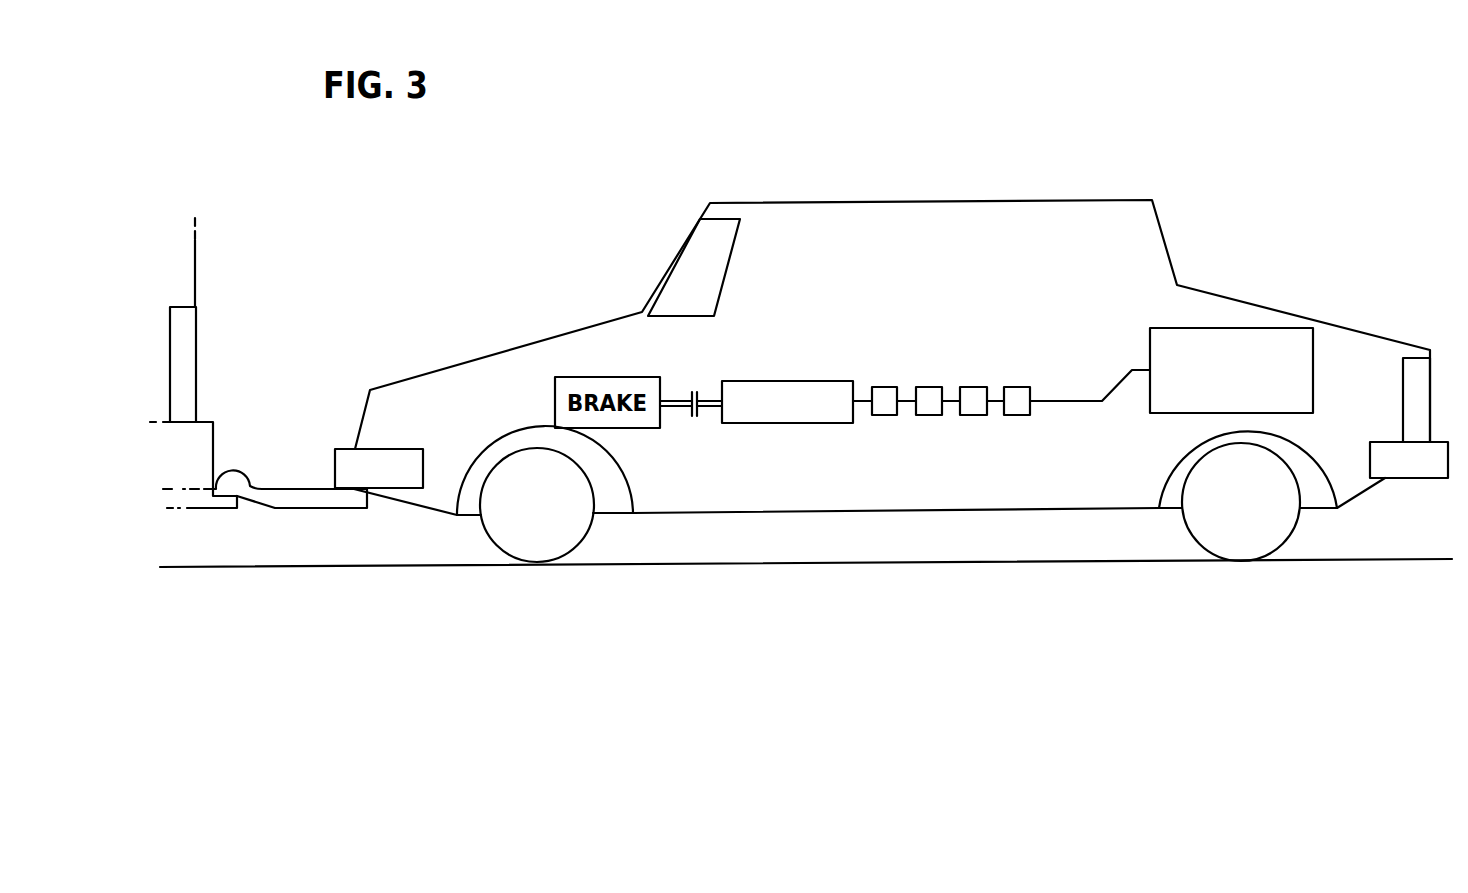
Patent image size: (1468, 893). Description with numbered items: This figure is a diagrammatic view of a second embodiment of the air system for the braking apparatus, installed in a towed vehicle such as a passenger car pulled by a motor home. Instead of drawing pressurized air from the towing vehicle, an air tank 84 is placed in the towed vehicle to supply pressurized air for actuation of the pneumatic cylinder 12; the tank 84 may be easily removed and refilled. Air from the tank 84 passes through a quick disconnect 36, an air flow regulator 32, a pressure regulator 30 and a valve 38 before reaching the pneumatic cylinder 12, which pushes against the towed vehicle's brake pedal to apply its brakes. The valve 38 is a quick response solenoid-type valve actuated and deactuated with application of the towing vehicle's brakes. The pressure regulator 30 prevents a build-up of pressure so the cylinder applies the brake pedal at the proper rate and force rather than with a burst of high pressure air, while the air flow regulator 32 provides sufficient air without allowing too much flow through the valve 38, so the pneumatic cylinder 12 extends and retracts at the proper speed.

The pneumatic cylinder 12 is at (747, 381).
The valve 38 is at (883, 382).
The pressure regulator 30 is at (927, 382).
The air flow regulator 32 is at (972, 382).
The quick disconnect 36 is at (1016, 382).
The air tank 84 is at (1154, 328).